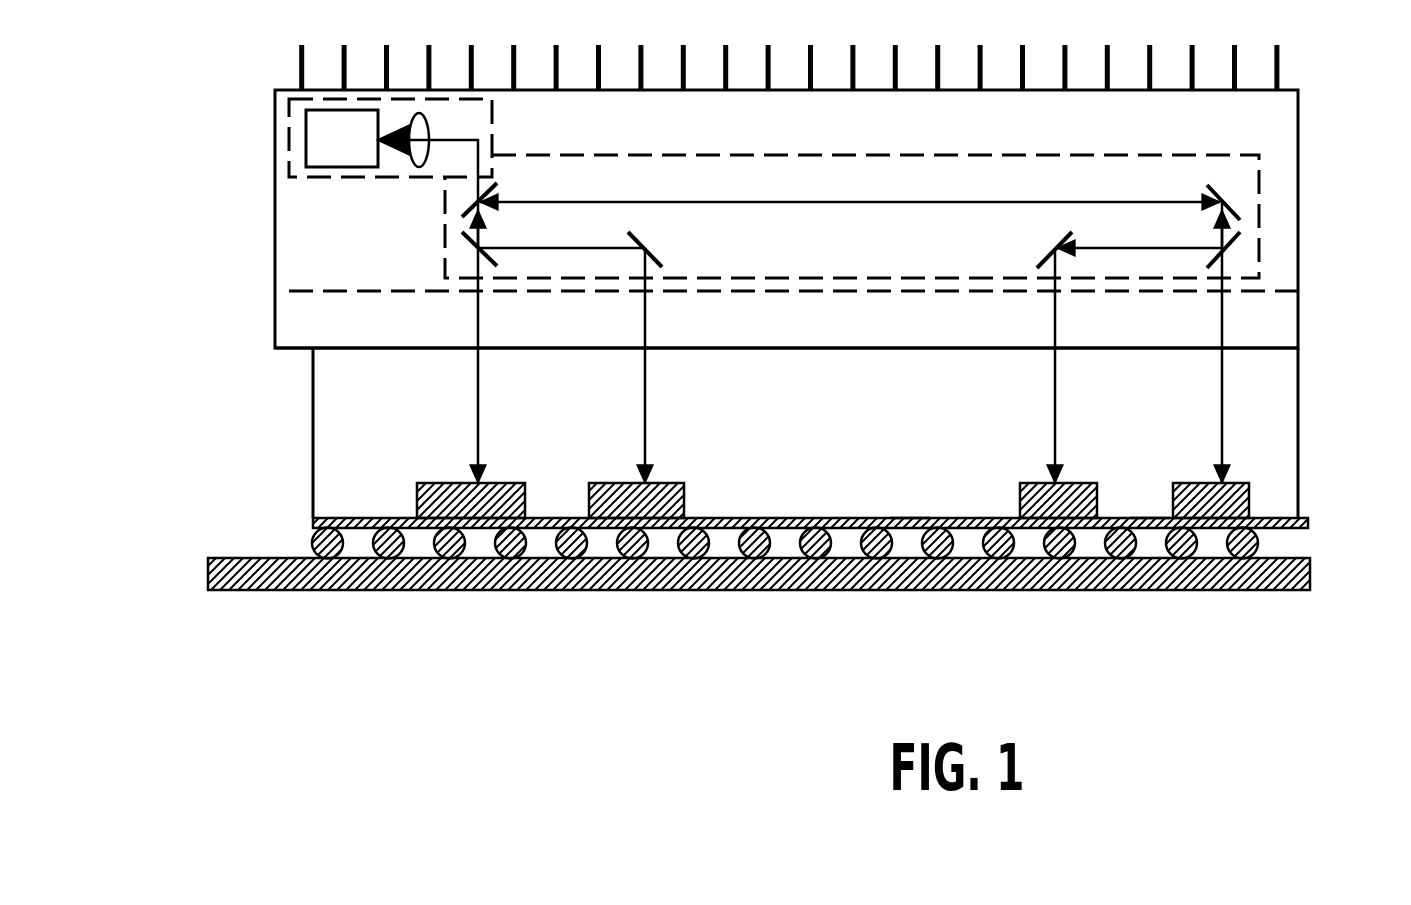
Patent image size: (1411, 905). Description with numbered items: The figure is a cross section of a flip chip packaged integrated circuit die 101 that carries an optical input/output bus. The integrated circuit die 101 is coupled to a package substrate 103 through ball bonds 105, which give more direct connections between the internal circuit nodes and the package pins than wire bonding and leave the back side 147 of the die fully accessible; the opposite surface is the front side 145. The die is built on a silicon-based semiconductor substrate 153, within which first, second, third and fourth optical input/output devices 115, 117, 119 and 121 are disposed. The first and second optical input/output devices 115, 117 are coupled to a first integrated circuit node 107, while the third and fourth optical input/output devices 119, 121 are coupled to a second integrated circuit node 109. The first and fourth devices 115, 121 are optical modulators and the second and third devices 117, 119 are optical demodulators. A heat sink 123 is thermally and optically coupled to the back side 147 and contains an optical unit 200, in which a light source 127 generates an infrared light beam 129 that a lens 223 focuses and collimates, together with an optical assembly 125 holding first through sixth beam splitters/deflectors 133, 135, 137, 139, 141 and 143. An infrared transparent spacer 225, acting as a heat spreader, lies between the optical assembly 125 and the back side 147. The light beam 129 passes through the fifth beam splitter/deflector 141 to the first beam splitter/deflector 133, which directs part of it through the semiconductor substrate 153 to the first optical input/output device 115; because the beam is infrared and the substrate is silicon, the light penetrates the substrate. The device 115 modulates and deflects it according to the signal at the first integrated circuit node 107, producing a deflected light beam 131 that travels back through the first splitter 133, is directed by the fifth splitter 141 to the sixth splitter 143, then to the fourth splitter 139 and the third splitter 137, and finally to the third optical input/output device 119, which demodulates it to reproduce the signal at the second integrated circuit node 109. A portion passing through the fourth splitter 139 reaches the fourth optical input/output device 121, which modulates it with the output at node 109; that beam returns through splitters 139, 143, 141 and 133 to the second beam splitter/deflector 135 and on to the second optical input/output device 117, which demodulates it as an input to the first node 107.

The integrated circuit die 101 is at (323, 402).
The package substrate 103 is at (208, 577).
The ball bonds 105 is at (312, 542).
The first integrated circuit node 107 is at (573, 517).
The second integrated circuit node 109 is at (1152, 515).
The first optical input/output device 115 is at (417, 488).
The second optical input/output device 117 is at (680, 482).
The third optical input/output device 119 is at (1018, 492).
The fourth optical input/output device 121 is at (1250, 483).
The heat sink 123 is at (1302, 110).
The optical assembly 125 is at (1250, 178).
The light source 127 is at (328, 140).
The light beam 129 is at (472, 140).
The deflected light beam 131 is at (735, 197).
The first beam splitter/deflector 133 is at (500, 257).
The second beam splitter/deflector 135 is at (662, 258).
The third beam splitter/deflector 137 is at (1035, 258).
The fourth beam splitter/deflector 139 is at (1217, 237).
The fifth beam splitter/deflector 141 is at (500, 180).
The sixth beam splitter/deflector 143 is at (1203, 185).
The front side 145 is at (910, 515).
The back side 147 is at (820, 352).
The semiconductor substrate 153 is at (368, 440).
The optical unit 200 is at (288, 103).
The lens 223 is at (413, 156).
The infrared transparent spacer 225 is at (1278, 327).